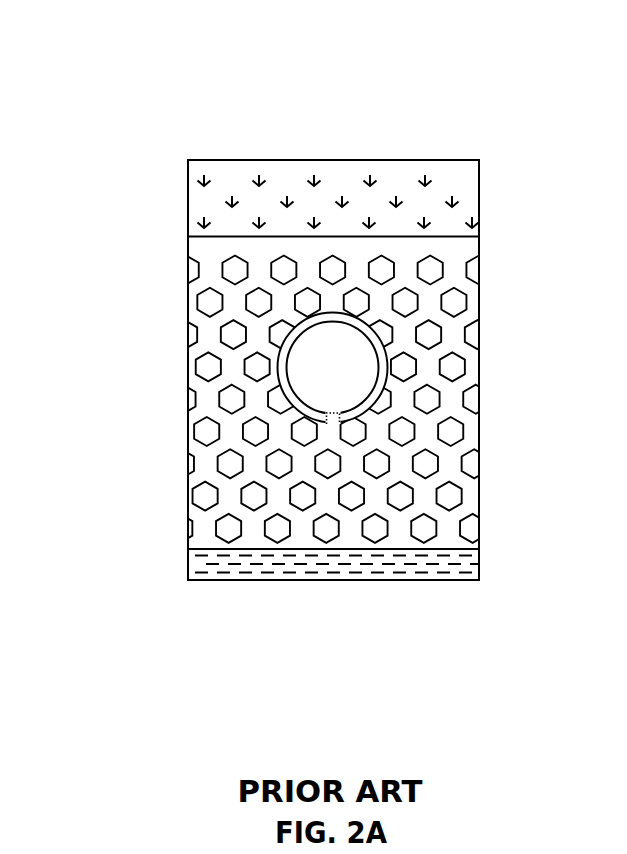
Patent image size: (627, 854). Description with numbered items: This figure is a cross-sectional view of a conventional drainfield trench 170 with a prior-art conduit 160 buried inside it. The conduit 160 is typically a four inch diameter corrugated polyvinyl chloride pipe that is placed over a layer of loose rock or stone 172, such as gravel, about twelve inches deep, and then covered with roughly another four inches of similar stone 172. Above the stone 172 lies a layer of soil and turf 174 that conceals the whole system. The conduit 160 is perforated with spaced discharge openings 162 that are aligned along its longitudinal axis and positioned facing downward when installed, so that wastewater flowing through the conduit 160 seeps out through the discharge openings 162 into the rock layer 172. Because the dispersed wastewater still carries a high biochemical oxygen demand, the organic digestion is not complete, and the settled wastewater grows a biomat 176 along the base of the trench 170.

The drainfield trench 170 is at (163, 148).
The soil and turf 174 is at (467, 183).
The loose rock or stone 172 is at (193, 480).
The biomat 176 is at (193, 560).
The conduit 160 is at (385, 350).
The discharge openings 162 is at (339, 421).